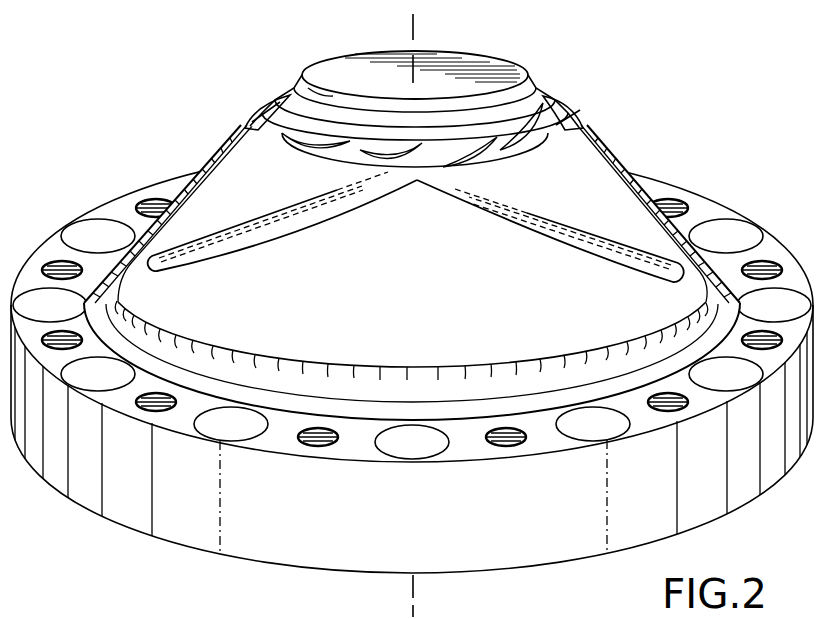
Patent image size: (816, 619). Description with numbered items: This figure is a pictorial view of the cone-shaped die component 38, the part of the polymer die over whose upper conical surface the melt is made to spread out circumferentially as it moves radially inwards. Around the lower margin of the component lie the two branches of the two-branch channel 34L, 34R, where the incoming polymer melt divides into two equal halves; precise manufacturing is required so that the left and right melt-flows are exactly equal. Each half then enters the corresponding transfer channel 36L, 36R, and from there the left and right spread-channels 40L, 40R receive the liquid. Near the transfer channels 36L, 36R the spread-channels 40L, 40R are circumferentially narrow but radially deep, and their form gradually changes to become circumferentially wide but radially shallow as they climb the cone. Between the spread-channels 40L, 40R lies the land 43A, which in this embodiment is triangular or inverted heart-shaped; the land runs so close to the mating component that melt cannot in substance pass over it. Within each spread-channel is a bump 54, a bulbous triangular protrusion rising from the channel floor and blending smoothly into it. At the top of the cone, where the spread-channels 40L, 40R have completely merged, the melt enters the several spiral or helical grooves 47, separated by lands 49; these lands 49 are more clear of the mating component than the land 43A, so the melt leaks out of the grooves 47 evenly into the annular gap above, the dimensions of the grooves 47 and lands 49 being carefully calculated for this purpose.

The die component 38 is at (126, 182).
The spiral grooves 47 is at (245, 126).
The lands 49 is at (370, 150).
The bump 54 is at (222, 232).
The left spread-channel 40L is at (157, 277).
The right spread-channel 40R is at (672, 282).
The left transfer channel 36L is at (135, 300).
The right transfer channel 36R is at (690, 296).
The left branch of two-branch channel 34L is at (320, 364).
The right branch of two-branch channel 34R is at (523, 367).
The land 43A is at (440, 314).